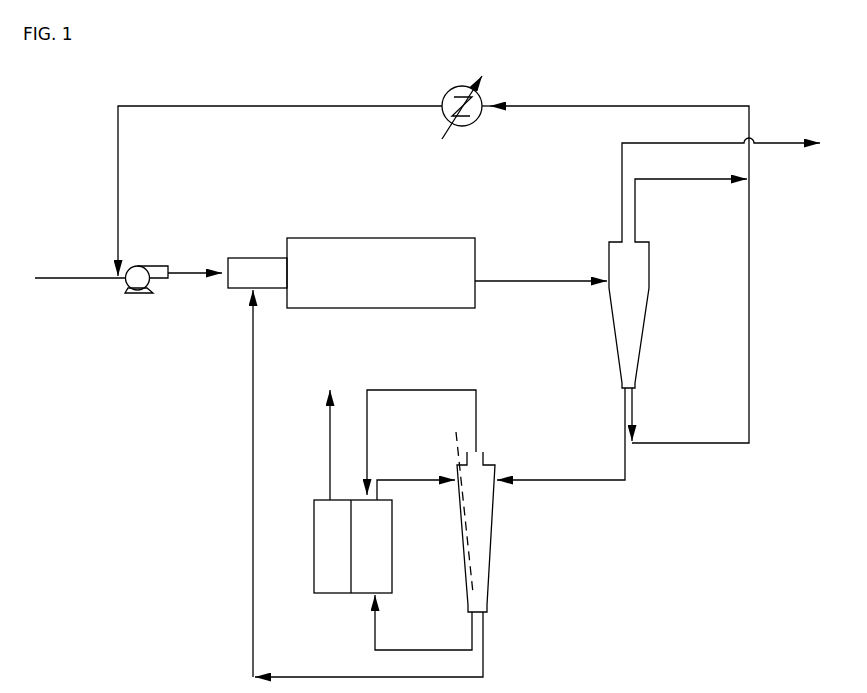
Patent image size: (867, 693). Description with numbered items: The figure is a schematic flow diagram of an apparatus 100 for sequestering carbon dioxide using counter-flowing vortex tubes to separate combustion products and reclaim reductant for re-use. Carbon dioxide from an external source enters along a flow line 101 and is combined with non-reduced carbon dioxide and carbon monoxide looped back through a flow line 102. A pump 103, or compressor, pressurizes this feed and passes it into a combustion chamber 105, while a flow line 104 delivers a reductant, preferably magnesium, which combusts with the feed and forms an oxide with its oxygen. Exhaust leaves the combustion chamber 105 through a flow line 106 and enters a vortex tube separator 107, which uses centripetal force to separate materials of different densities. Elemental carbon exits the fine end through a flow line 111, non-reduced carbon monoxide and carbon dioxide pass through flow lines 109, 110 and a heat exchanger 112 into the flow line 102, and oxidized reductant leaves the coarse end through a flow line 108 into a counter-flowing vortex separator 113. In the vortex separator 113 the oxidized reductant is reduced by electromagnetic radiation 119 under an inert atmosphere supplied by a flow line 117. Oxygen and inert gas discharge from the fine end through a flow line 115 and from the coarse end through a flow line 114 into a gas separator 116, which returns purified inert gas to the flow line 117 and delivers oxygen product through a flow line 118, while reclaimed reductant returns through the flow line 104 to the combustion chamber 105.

The apparatus 100 is at (178, 430).
The flow line 101 is at (79, 277).
The flow line 102 is at (119, 180).
The pump 103 is at (150, 260).
The flow line 104 is at (253, 373).
The combustion chamber 105 is at (331, 236).
The flow line 106 is at (493, 282).
The vortex tube separator 107 is at (613, 338).
The flow line 108 is at (624, 406).
The flow line 109 is at (660, 443).
The flow line 110 is at (648, 181).
The flow line 111 is at (657, 143).
The heat exchanger 112 is at (462, 129).
The vortex separator 113 is at (497, 505).
The flow line 114 is at (375, 625).
The flow line 115 is at (432, 388).
The gas separator 116 is at (395, 550).
The flow line 117 is at (415, 481).
The flow line 118 is at (330, 440).
The electromagnetic radiation 119 is at (457, 450).